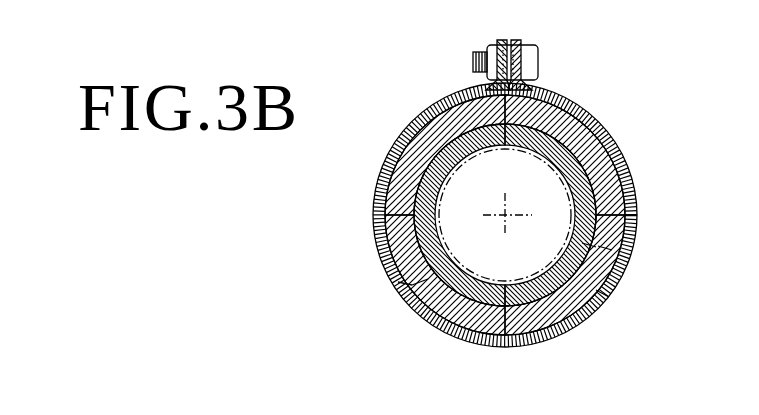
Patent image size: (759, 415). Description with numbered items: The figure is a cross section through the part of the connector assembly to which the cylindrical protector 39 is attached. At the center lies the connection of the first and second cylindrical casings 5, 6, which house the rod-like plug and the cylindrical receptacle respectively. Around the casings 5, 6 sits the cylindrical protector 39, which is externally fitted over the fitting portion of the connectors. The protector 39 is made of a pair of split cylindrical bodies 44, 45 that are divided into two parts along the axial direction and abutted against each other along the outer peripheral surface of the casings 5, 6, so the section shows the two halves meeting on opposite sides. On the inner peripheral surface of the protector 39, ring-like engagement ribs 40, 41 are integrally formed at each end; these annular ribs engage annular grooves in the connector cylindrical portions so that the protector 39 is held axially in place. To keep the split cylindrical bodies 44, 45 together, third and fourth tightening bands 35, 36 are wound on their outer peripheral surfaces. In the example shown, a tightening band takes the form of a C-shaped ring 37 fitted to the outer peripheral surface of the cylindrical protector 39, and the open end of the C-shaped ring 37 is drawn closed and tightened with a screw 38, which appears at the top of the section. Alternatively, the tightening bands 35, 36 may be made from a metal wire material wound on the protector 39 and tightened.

The screw 38 is at (538, 63).
The cylindrical protector 39 is at (398, 162).
The split cylindrical body 44 is at (596, 143).
The third tightening band 35 is at (625, 167).
The fourth tightening band 36 is at (505, 215).
The annular engagement rib 40 is at (598, 246).
The annular engagement rib 41 is at (505, 215).
The split cylindrical body 45 is at (608, 292).
The first cylindrical casing 5 is at (412, 285).
The second cylindrical casing 6 is at (610, 232).
The C-shaped ring 37 is at (555, 343).